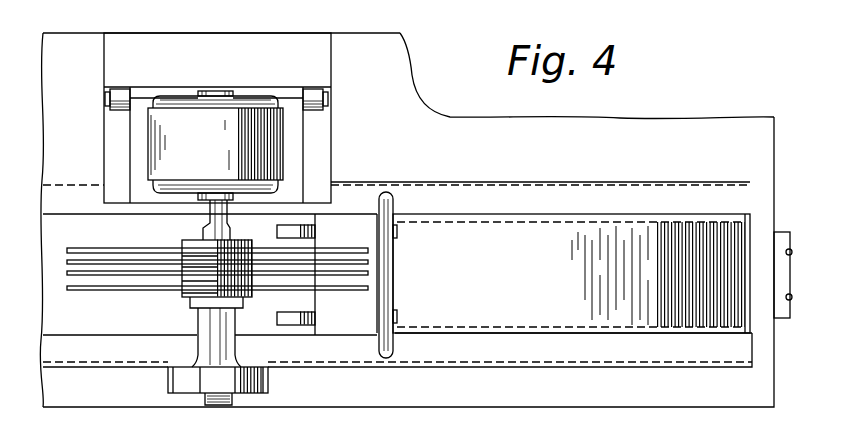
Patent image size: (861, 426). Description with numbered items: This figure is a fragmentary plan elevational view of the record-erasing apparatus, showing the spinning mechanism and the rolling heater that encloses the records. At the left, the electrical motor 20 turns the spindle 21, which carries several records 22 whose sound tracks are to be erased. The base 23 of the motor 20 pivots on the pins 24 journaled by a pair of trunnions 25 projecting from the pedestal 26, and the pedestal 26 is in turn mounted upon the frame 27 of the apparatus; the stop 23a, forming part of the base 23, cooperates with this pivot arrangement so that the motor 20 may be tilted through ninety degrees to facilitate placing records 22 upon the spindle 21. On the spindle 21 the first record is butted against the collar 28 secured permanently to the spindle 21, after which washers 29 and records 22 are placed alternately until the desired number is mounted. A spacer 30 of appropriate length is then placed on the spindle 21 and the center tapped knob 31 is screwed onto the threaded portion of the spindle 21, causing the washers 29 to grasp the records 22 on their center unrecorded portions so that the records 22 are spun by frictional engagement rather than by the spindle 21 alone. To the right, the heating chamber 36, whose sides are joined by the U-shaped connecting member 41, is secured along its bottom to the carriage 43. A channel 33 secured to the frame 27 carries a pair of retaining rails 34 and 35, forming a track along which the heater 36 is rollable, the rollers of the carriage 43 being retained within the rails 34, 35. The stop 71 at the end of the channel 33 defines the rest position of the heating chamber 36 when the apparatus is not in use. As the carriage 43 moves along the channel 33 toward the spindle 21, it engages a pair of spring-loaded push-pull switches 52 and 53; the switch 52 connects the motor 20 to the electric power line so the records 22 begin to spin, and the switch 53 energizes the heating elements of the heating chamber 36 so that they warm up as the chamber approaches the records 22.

The electrical motor 20 is at (163, 125).
The spindle 21 is at (203, 230).
The records 22 is at (131, 250).
The base 23 is at (295, 145).
The stop 23a is at (277, 93).
The pins 24 is at (105, 99).
The trunnions 25 is at (118, 92).
The pedestal 26 is at (265, 50).
The frame 27 is at (397, 97).
The collar 28 is at (251, 242).
The washers 29 is at (193, 296).
The spacer 30 is at (215, 338).
The center tapped knob 31 is at (183, 382).
The channel 33 is at (67, 231).
The retaining rail 34 is at (512, 197).
The retaining rail 35 is at (483, 352).
The heating chamber 36 is at (573, 233).
The U-shaped connecting member 41 is at (649, 247).
The carriage 43 is at (356, 323).
The push-pull switch 52 is at (293, 243).
The push-pull switch 53 is at (294, 319).
The stop 71 is at (783, 320).